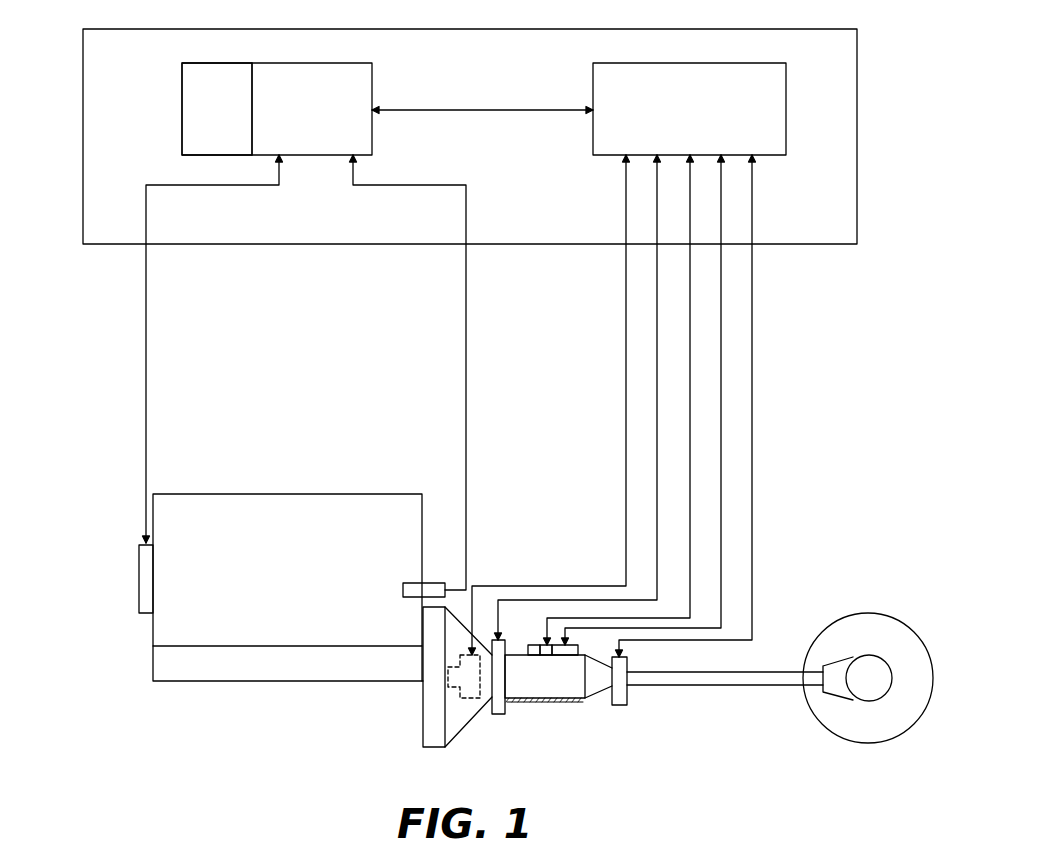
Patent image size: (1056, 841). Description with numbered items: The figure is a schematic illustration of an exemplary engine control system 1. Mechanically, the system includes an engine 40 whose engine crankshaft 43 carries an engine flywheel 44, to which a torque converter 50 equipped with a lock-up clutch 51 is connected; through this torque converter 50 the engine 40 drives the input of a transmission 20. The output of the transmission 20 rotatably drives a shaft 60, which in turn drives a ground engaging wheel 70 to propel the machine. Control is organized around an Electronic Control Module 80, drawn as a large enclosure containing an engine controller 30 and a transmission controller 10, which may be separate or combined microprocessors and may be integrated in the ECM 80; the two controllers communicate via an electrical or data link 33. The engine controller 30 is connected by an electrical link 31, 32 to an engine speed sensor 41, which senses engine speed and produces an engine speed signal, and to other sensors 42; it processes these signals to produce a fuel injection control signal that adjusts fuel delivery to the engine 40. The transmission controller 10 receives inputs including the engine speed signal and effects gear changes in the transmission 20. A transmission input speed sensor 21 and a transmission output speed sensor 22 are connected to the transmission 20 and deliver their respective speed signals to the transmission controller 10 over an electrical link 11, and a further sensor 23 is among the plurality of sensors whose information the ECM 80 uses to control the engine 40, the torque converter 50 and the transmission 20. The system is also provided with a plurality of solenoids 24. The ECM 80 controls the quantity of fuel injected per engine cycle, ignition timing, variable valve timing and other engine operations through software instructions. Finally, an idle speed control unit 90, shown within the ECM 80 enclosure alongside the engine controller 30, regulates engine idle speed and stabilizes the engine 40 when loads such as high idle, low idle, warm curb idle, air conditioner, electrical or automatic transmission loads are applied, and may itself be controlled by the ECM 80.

The engine control system 1 is at (980, 300).
The transmission controller 10 is at (787, 128).
The electrical link 11 is at (655, 265).
The transmission 20 is at (560, 702).
The transmission input speed sensor 21 is at (500, 714).
The transmission output speed sensor 22 is at (627, 703).
The sensor 23 is at (565, 645).
The solenoids 24 is at (533, 645).
The engine controller 30 is at (372, 73).
The electrical link 31 is at (146, 282).
The electrical link 32 is at (466, 365).
The communication link 33 is at (553, 109).
The engine 40 is at (275, 492).
The engine speed sensor 41 is at (139, 565).
The other sensors 42 is at (435, 582).
The engine crankshaft 43 is at (180, 681).
The engine flywheel 44 is at (422, 718).
The torque converter 50 is at (469, 724).
The lock-up clutch 51 is at (457, 680).
The shaft 60 is at (740, 685).
The ground engaging wheel 70 is at (915, 630).
The Electronic Control Module 80 is at (857, 92).
The idle speed control unit 90 is at (182, 79).